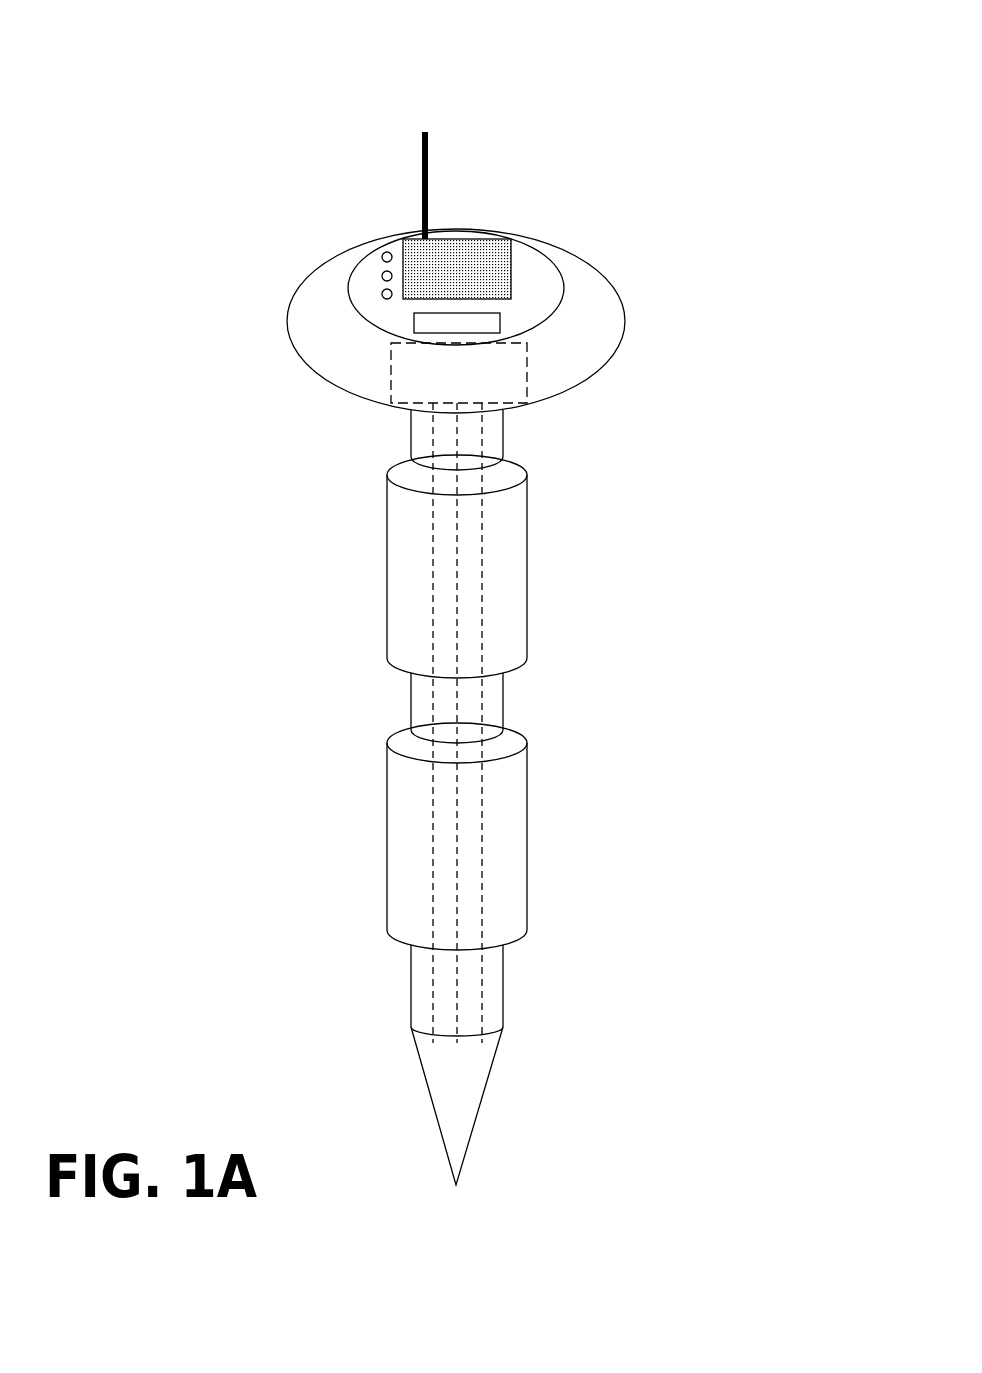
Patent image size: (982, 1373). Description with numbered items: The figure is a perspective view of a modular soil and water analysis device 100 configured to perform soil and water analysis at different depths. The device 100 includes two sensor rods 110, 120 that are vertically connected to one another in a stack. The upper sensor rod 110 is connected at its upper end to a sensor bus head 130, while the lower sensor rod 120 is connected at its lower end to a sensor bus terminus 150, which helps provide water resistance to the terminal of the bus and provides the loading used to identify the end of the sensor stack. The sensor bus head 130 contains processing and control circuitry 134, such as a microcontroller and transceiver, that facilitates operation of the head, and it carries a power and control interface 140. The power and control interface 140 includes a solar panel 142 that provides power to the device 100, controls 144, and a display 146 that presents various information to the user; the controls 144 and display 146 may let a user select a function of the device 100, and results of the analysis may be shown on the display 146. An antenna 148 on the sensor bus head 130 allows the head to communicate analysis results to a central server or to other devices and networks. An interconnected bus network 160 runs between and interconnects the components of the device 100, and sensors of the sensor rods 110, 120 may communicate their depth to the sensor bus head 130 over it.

The modular soil and water analysis device 100 is at (132, 106).
The sensor rod 110 is at (527, 562).
The sensor rod 120 is at (527, 847).
The sensor bus head 130 is at (598, 268).
The processing and control circuitry 134 is at (528, 363).
The power and control interface 140 is at (548, 260).
The solar panel 142 is at (457, 238).
The controls 144 is at (381, 252).
The display 146 is at (413, 322).
The antenna 148 is at (422, 150).
The sensor bus terminus 150 is at (477, 1090).
The interconnected bus network 160 is at (478, 455).